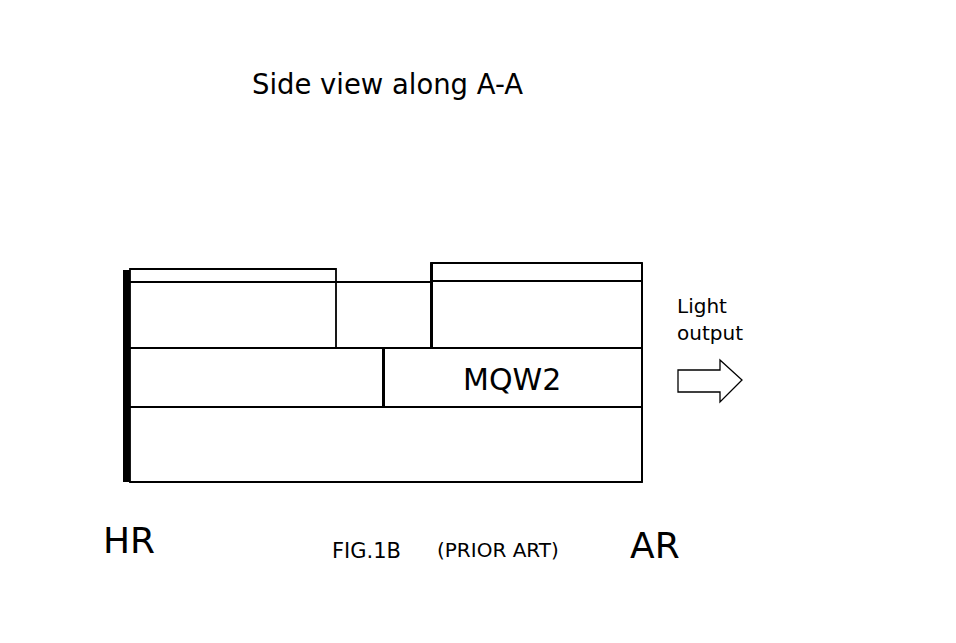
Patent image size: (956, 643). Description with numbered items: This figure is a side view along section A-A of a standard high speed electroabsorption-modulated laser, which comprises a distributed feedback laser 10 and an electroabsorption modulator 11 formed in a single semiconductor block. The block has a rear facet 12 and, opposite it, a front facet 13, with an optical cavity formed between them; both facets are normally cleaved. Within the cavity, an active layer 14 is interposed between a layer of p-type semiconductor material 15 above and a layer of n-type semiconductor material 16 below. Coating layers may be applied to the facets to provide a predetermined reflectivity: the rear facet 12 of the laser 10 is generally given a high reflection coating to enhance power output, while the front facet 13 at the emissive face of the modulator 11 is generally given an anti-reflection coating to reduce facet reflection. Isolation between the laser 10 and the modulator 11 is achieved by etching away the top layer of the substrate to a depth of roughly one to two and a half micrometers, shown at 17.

The distributed feedback (DFB) laser 10 is at (240, 238).
The electroabsorption modulator (EAM) 11 is at (533, 235).
The rear facet 12 is at (126, 424).
The front facet 13 is at (645, 380).
The active layer 14 is at (155, 388).
The p-type semiconductor layer 15 is at (163, 302).
The n-type semiconductor layer 16 is at (240, 445).
The etched isolation region 17 is at (378, 305).